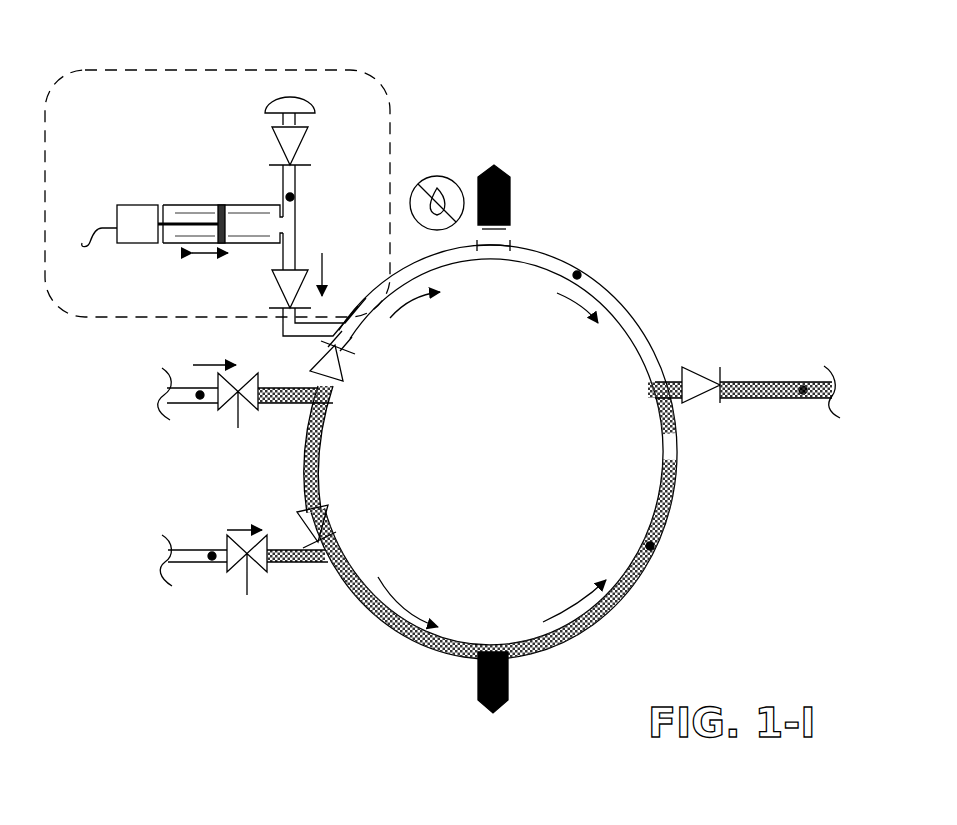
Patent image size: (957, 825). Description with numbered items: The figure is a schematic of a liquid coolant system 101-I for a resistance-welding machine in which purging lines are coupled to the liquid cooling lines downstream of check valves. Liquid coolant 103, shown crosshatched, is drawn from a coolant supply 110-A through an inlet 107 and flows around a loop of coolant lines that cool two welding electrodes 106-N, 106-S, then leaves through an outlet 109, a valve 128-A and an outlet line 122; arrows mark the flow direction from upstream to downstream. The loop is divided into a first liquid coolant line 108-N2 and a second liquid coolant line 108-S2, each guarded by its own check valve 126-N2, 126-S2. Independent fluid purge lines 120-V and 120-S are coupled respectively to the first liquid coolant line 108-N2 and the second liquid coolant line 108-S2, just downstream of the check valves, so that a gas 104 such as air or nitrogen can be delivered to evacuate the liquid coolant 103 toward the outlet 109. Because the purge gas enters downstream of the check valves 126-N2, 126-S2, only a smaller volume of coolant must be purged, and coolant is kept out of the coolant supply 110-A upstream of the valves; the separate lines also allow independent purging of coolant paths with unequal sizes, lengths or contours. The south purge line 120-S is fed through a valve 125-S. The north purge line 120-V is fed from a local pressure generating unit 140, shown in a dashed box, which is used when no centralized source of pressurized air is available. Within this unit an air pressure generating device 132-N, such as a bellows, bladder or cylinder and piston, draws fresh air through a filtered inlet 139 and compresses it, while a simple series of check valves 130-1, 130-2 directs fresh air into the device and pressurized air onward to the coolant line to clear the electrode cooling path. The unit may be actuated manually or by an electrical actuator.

The local pressure generating unit 140 is at (133, 66).
The inlet with filter 139 is at (308, 103).
The check valve 130-1 is at (306, 140).
The fluid purge line 120-V is at (283, 188).
The air pressure generating device 132-N is at (168, 205).
The check valve 130-2 is at (273, 283).
The gas 104 is at (298, 193).
The welding electrode 106-N is at (490, 164).
The liquid coolant system 101-I is at (605, 198).
The first liquid coolant line 108-N2 is at (353, 336).
The check valve 126-N2 is at (344, 381).
The inlet 107 is at (317, 386).
The coolant supply 110-A is at (165, 388).
The liquid coolant 103 is at (200, 400).
The outlet 109 is at (665, 380).
The valve 128-A is at (694, 368).
The outlet line 122 is at (838, 383).
The fluid purge line 120-S is at (197, 548).
The valve 125-S is at (257, 576).
The check valve 126-S2 is at (328, 506).
The second liquid coolant line 108-S2 is at (333, 541).
The welding electrode 106-S is at (478, 681).